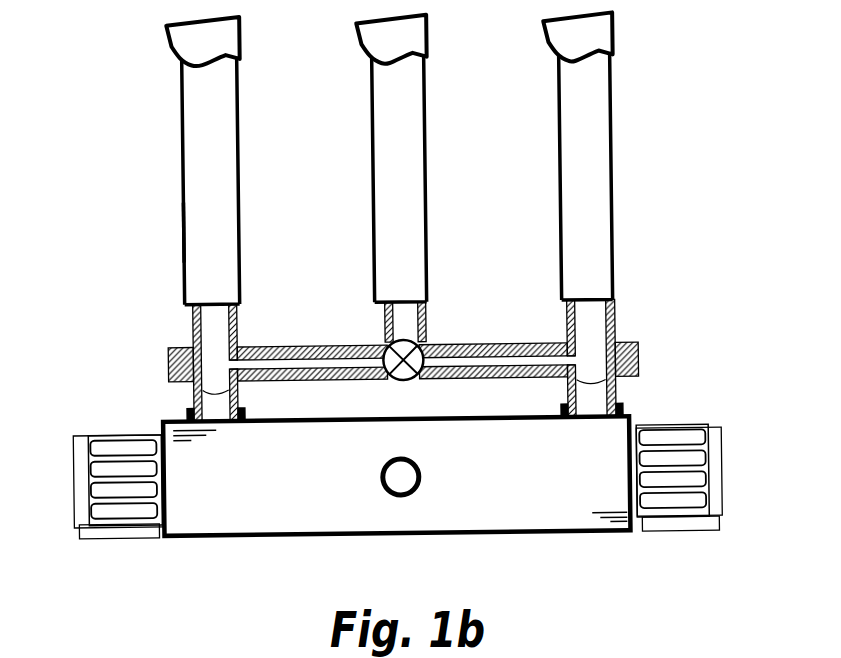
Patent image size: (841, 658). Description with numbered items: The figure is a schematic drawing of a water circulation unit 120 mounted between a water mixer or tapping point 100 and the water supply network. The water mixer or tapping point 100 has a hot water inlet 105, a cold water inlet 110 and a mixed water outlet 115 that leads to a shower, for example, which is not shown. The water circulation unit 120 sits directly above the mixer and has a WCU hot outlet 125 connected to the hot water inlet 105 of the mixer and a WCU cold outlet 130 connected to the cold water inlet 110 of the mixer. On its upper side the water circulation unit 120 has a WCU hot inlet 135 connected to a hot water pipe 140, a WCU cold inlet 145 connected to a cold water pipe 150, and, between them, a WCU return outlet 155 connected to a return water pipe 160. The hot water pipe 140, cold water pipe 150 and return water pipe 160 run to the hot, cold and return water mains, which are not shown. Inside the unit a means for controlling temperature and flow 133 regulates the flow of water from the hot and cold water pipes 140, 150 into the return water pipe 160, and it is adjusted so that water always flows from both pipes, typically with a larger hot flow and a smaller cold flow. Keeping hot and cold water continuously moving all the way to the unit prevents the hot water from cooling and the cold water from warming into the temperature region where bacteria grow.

The water mixer or tapping point 100 is at (150, 574).
The hot water inlet 105 is at (185, 411).
The cold water inlet 110 is at (625, 409).
The mixed water outlet 115 is at (413, 490).
The water circulation unit 120 is at (135, 252).
The WCU hot outlet 125 is at (188, 403).
The WCU cold outlet 130 is at (617, 397).
The means for controlling temperature and flow 133 is at (428, 350).
The WCU hot inlet 135 is at (192, 327).
The hot water pipe 140 is at (183, 180).
The WCU cold inlet 145 is at (616, 311).
The cold water pipe 150 is at (614, 182).
The WCU return outlet 155 is at (384, 332).
The return water pipe 160 is at (375, 195).